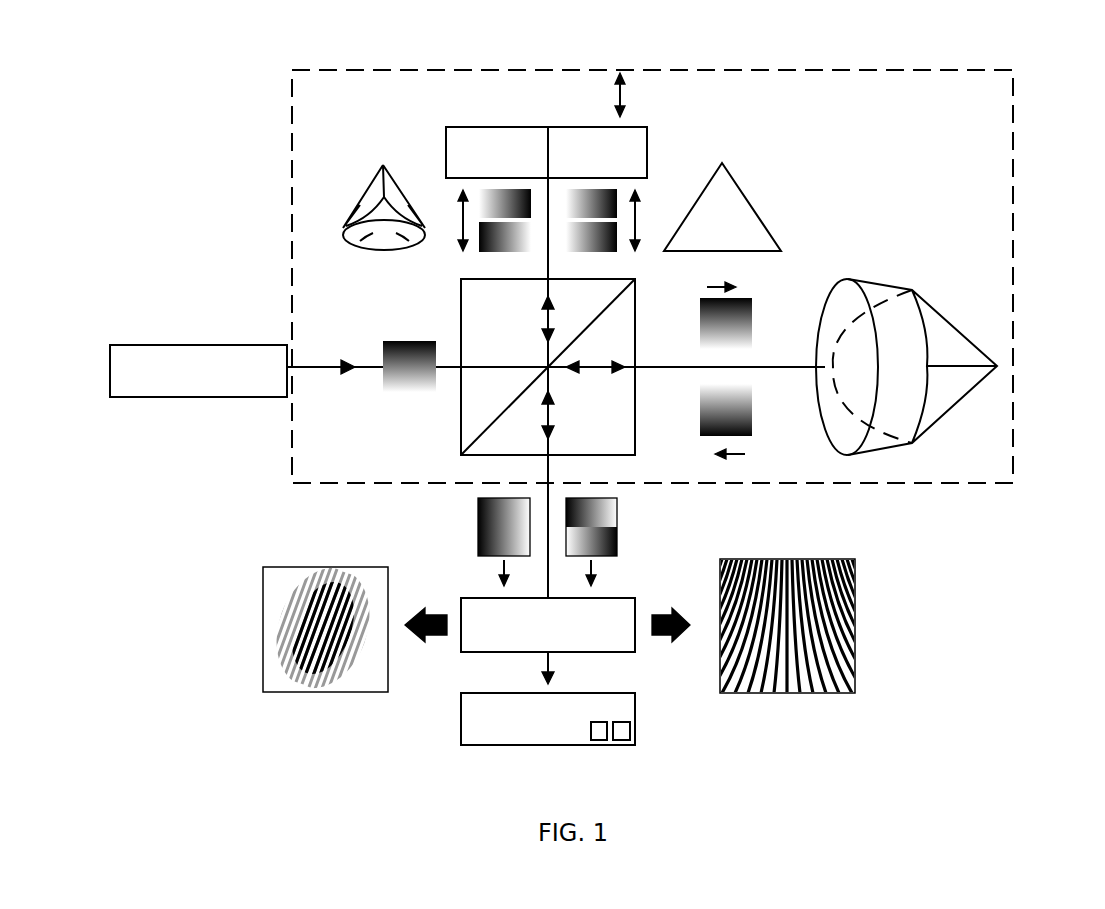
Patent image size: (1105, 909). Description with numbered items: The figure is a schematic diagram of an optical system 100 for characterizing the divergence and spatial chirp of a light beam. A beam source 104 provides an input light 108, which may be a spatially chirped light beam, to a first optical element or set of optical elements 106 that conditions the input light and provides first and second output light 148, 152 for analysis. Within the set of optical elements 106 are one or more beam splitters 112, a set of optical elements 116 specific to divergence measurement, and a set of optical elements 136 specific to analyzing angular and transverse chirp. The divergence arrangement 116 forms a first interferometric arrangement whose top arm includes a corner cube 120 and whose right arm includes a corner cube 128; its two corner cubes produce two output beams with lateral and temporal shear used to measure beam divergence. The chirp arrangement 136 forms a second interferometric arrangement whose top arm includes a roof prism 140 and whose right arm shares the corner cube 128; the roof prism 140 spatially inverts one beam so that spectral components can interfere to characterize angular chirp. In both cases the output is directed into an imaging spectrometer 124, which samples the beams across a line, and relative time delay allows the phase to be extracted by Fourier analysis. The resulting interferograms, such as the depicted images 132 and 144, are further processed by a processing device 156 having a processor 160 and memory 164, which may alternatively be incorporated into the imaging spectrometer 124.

The optical system 100 is at (1032, 94).
The beam source 104 is at (110, 345).
The first optical element or set of optical elements 106 is at (1013, 205).
The input light 108 is at (370, 367).
The beam splitter 112 is at (637, 295).
The set of optical elements specific to divergence measurement 116 is at (358, 116).
The corner cube 120 is at (358, 191).
The imaging spectrometer 124 is at (635, 598).
The corner cube 128 is at (940, 308).
The single-shot interferogram image 132 is at (263, 567).
The set of optical elements specific to analyzing angular and transverse chirp 136 is at (803, 126).
The roof prism 140 is at (750, 203).
The spatially chirped interferogram image 144 is at (855, 559).
The first output light 148 is at (470, 516).
The second output light 152 is at (634, 516).
The processing device 156 is at (635, 722).
The processor 160 is at (622, 745).
The memory 164 is at (603, 745).